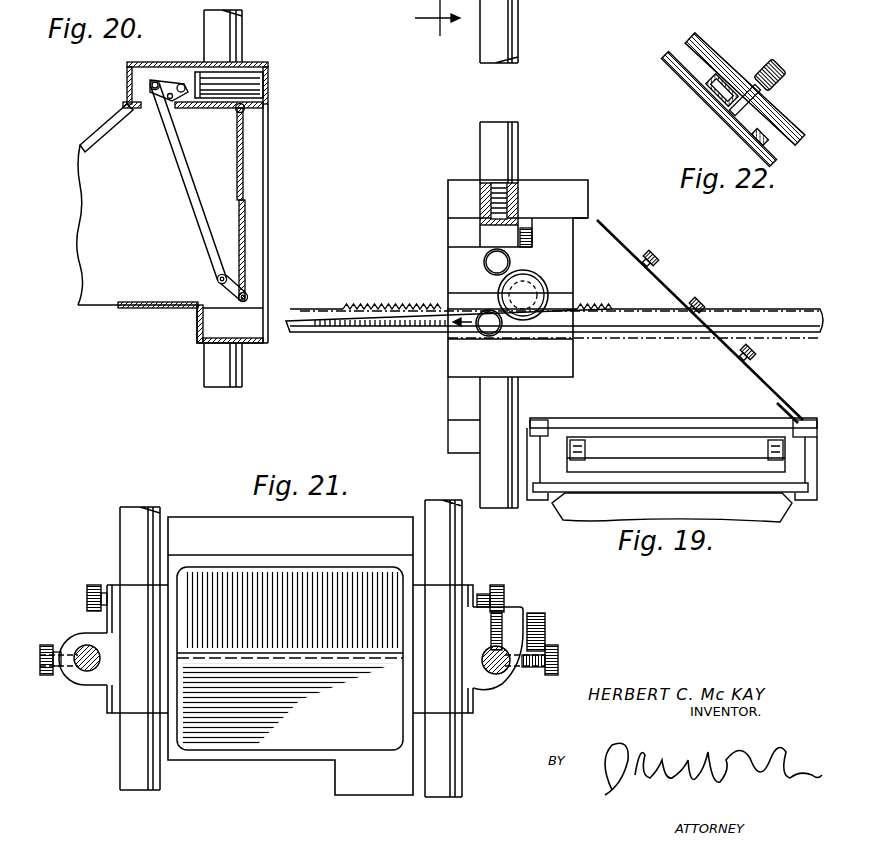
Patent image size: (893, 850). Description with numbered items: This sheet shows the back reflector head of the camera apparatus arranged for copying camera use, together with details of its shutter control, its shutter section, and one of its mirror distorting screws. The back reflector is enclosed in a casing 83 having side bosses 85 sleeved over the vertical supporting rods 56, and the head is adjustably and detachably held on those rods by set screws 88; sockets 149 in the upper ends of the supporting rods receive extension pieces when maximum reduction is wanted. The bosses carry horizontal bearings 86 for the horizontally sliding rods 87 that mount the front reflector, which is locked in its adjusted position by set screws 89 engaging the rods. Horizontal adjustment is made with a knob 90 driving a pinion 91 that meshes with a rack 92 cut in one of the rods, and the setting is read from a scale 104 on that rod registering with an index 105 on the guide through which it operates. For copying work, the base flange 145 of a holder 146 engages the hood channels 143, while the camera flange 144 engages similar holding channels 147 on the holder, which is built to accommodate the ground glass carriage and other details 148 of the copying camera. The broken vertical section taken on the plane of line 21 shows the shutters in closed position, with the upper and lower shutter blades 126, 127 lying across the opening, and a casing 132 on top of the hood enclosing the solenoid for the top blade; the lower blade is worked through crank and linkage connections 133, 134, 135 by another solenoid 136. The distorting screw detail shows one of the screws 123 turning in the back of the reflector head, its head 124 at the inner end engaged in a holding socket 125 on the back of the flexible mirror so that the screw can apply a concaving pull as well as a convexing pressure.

In FIG. 19, the section line 21— 21 is at (437, 31).
In FIG. 20, the vertical supporting rods 56 is at (243, 37).
In FIG. 19, the vertical supporting rods 56 is at (513, 38).
In FIG. 21, the vertical supporting rods 56 is at (133, 518).
In FIG. 20, the casing 83 is at (102, 130).
In FIG. 22, the casing 83 is at (803, 114).
In FIG. 19, the casing 83 is at (700, 321).
In FIG. 21, the casing 83 is at (191, 558).
In FIG. 19, the side bosses 85 is at (460, 265).
In FIG. 21, the side bosses 85 is at (113, 583).
In FIG. 19, the horizontal bearings 86 is at (470, 335).
In FIG. 21, the horizontal bearings 86 is at (80, 633).
In FIG. 19, the horizontally sliding rods 87 is at (747, 317).
In FIG. 21, the horizontally sliding rods 87 is at (95, 672).
In FIG. 19, the set screws 88 is at (486, 258).
In FIG. 21, the set screws 88 is at (88, 593).
In FIG. 19, the set screws 89 is at (483, 328).
In FIG. 21, the set screws 89 is at (50, 678).
In FIG. 19, the knob 90 is at (548, 292).
In FIG. 21, the knob 90 is at (537, 614).
In FIG. 19, the pinion 91 is at (525, 288).
In FIG. 21, the pinion 91 is at (513, 617).
In FIG. 19, the rack 92 is at (360, 308).
In FIG. 19, the scale 104 is at (377, 328).
In FIG. 19, the index 105 is at (452, 323).
In FIG. 22, the reflector distorting screws 123 is at (787, 50).
In FIG. 19, the reflector distorting screws 123 is at (695, 302).
In FIG. 22, the heads 124 is at (728, 115).
In FIG. 22, the holding sockets 125 is at (718, 76).
In FIG. 20, the upper shutter plate 126 is at (246, 166).
In FIG. 21, the upper shutter plate 126 is at (290, 612).
In FIG. 20, the lower shutter plate 127 is at (247, 252).
In FIG. 21, the lower shutter plate 127 is at (290, 701).
In FIG. 21, the casing 132 is at (375, 525).
In FIG. 20, the crank and linkage connections 133 is at (228, 297).
In FIG. 20, the crank and linkage connections 134 is at (187, 189).
In FIG. 20, the crank and linkage connections 135 is at (150, 84).
In FIG. 20, the solenoid 136 is at (250, 72).
In FIG. 22, the channels 143 is at (812, 11).
In FIG. 19, the channels 143 is at (807, 420).
In FIG. 22, the camera flange 144 is at (771, 9).
In FIG. 19, the camera flange 144 is at (773, 493).
In FIG. 19, the base flange 145 is at (552, 422).
In FIG. 19, the holder 146 is at (568, 456).
In FIG. 19, the holding channels 147 is at (537, 502).
In FIG. 19, the ground glass carriage and other details 148 is at (684, 456).
In FIG. 19, the sockets 149 is at (519, 185).